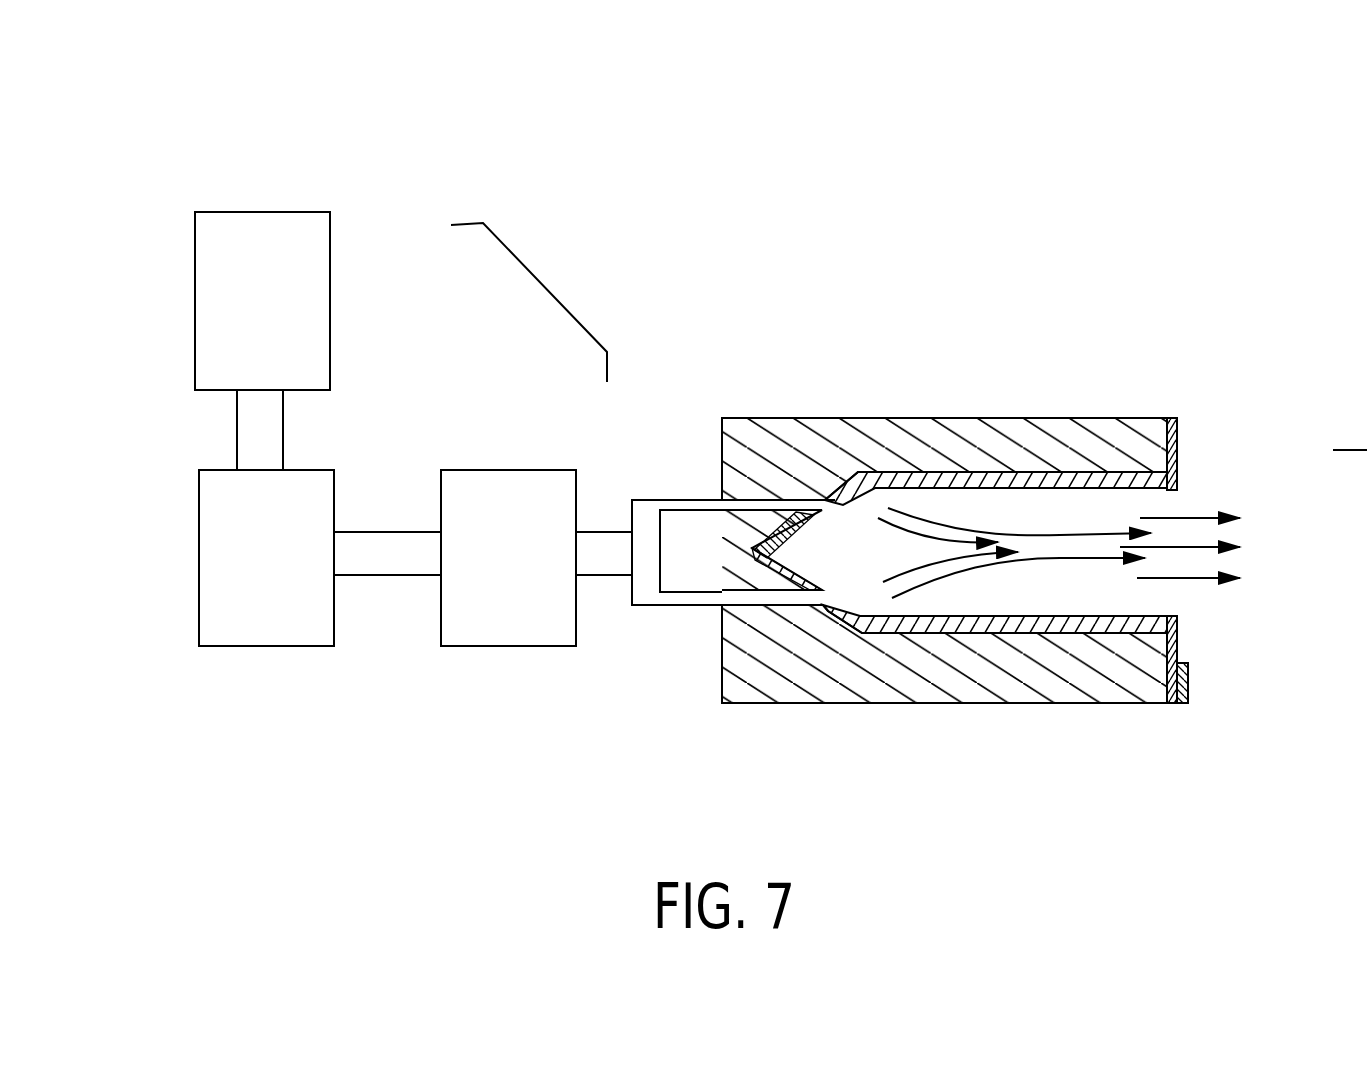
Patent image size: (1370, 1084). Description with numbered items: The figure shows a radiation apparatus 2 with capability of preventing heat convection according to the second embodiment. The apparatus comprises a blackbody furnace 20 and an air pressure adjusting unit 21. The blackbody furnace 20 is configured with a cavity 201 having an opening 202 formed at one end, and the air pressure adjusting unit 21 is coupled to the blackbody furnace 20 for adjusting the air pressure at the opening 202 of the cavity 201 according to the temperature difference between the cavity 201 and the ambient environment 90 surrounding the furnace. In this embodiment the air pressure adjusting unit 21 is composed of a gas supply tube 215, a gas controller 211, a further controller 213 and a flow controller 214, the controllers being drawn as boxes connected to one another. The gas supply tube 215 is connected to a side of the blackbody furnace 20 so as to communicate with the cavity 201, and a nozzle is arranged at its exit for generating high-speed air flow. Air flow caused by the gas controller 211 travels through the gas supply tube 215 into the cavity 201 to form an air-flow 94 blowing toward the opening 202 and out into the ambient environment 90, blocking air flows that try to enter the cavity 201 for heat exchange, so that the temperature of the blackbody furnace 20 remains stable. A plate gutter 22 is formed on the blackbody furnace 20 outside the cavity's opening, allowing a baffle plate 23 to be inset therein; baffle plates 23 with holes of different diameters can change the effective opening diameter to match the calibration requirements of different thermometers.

The plasma processing apparatus 2 is at (152, 199).
The blackbody furnace 20 is at (911, 412).
The cavity 201 is at (865, 567).
The opening 202 is at (1170, 590).
The air pressure adjusting unit 21 is at (545, 288).
The gas controller 211 is at (323, 256).
The power supply 213 is at (308, 478).
The flow controller 214 is at (474, 476).
The gas supply tube 215 is at (673, 500).
The plate gutter 22 is at (1188, 673).
The baffle plate 23 is at (1177, 635).
The ambient environment 90 is at (1350, 428).
The air-flow 94 is at (1198, 518).